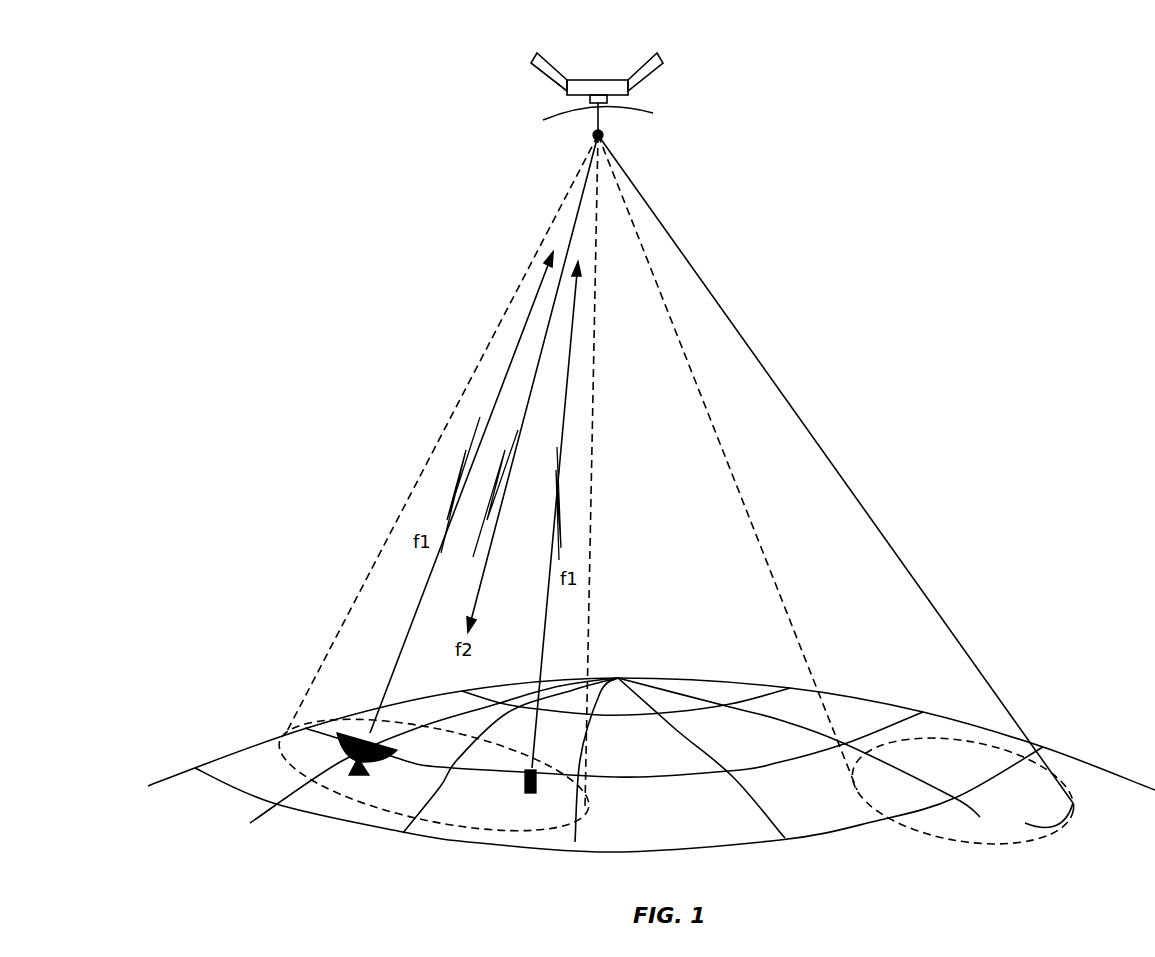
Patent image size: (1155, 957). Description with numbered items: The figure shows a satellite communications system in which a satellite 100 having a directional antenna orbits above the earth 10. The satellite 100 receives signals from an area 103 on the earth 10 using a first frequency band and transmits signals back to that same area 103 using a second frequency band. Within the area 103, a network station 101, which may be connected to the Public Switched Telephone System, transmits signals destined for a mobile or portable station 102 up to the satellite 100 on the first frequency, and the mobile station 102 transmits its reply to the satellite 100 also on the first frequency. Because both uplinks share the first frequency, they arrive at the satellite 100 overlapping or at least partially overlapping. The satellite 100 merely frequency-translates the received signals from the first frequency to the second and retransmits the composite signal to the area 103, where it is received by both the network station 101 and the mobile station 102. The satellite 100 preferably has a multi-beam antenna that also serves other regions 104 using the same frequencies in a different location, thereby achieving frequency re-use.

The satellite 100 is at (660, 63).
The earth 10 is at (863, 688).
The network station 101 is at (370, 755).
The mobile or portable station 102 is at (525, 775).
The area 103 is at (288, 755).
The other regions 104 is at (1025, 823).